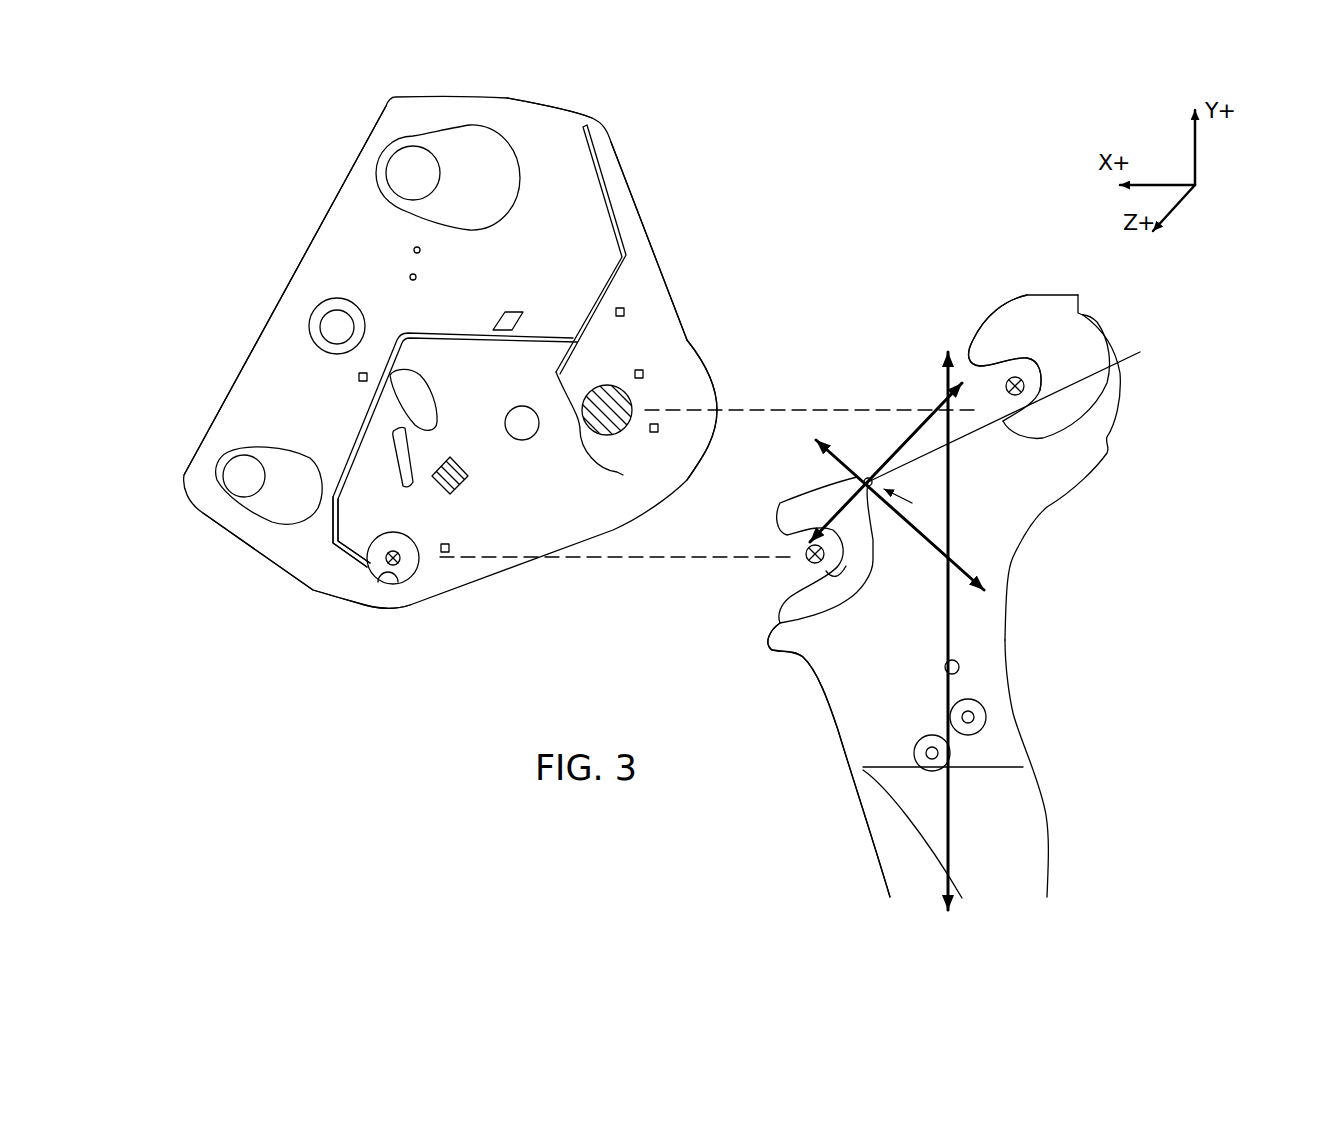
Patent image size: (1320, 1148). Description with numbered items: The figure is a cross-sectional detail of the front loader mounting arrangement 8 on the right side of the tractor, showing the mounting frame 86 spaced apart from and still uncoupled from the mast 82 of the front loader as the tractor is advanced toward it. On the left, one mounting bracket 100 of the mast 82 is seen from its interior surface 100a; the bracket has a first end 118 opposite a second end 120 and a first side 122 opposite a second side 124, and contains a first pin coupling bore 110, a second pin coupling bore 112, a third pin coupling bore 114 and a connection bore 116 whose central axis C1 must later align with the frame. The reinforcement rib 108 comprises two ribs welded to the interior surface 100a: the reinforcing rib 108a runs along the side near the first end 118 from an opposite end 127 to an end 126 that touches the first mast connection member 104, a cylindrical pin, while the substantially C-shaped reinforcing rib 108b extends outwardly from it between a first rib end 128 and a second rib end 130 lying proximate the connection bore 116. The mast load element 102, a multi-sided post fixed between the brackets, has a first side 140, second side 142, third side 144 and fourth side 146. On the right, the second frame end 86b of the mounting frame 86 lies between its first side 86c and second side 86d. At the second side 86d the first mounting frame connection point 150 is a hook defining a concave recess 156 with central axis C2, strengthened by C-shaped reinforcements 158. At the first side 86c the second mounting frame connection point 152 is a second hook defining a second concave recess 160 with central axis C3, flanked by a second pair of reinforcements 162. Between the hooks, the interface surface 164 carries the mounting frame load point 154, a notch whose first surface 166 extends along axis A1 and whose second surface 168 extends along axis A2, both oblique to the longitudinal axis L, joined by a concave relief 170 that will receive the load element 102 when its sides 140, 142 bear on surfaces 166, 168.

The front loader mounting arrangement 8 is at (902, 189).
The mast 82 is at (662, 126).
The mounting frame 86 is at (1125, 301).
The second frame end 86b is at (1154, 387).
The first side 86c is at (838, 720).
The second side 86d is at (1012, 698).
The mounting bracket 100 is at (762, 148).
The interior surface 100a is at (626, 220).
The mast load element 102 is at (461, 498).
The first mast connection member 104 is at (652, 396).
The reinforcement rib 108 is at (349, 564).
The reinforcing rib 108a is at (603, 178).
The reinforcing rib 108b is at (447, 343).
The first pin coupling bore 110 is at (400, 163).
The second pin coupling bore 112 is at (302, 338).
The third pin coupling bore 114 is at (229, 474).
The connection bore 116 is at (396, 583).
The first end 118 is at (518, 97).
The second end 120 is at (410, 606).
The first side 122 is at (225, 395).
The second side 124 is at (688, 328).
The end 126 is at (610, 428).
The opposite end 127 is at (585, 124).
The first rib end 128 is at (572, 336).
The second rib end 130 is at (368, 575).
The first side 140 is at (446, 490).
The second side 142 is at (462, 490).
The third side 144 is at (466, 473).
The fourth side 146 is at (438, 456).
The first mounting frame connection point 150 is at (1051, 277).
The second mounting frame connection point 152 is at (760, 599).
The mounting frame load point 154 is at (951, 538).
The concave recess 156 is at (1028, 412).
The reinforcements 158 is at (1110, 398).
The second concave recess 160 is at (842, 605).
The second pair of reinforcements 162 is at (833, 495).
The interface surface 164 is at (923, 447).
The first surface 166 is at (858, 484).
The second surface 168 is at (877, 477).
The relief 170 is at (950, 454).
The central axis C1 is at (414, 561).
The central axis C2 is at (1021, 398).
The central axis C3 is at (806, 563).
The axis A1 is at (964, 588).
The axis A2 is at (860, 478).
The longitudinal axis L is at (952, 835).